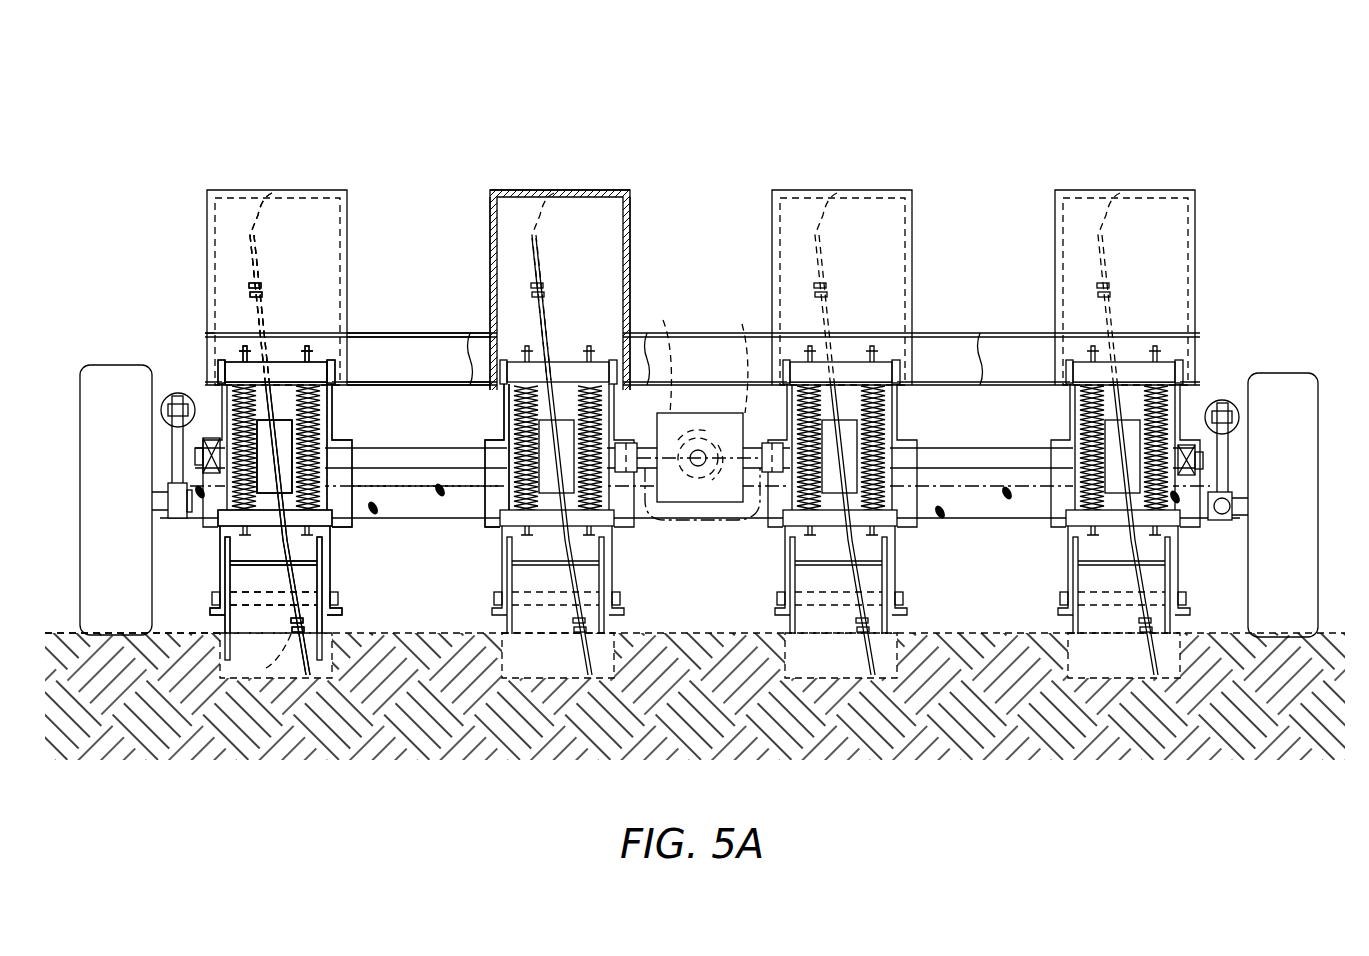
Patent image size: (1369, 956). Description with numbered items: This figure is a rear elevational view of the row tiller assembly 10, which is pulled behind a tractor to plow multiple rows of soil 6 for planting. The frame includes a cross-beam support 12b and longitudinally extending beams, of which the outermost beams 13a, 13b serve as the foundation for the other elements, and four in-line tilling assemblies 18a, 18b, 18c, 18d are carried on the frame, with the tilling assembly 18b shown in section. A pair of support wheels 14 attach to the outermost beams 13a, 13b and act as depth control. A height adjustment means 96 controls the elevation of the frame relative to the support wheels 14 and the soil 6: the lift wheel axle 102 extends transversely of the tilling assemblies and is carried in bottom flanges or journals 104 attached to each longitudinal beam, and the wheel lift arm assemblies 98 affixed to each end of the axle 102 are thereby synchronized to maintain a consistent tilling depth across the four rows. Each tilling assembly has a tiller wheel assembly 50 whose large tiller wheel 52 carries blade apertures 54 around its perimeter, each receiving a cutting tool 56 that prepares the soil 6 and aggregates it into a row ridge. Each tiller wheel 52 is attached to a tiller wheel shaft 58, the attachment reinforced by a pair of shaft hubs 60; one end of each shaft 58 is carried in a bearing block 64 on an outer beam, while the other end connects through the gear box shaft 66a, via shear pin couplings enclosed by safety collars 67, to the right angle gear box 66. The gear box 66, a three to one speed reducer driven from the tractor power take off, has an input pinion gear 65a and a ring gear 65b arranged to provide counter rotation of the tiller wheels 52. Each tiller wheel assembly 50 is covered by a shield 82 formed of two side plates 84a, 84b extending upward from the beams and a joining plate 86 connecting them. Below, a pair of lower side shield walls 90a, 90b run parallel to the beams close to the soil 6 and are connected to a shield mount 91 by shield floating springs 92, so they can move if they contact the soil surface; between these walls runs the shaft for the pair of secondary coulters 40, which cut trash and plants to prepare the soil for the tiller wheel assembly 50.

The soil 6 is at (430, 760).
The row tiller assembly 10 is at (126, 184).
The cross-beam support 12b is at (416, 355).
The outermost beam 13a is at (490, 417).
The outermost beam 13b is at (346, 412).
The support wheel 14 is at (116, 368).
The tilling assembly 18a is at (207, 82).
The tilling assembly 18b is at (492, 82).
The tilling assembly 18c is at (776, 82).
The tilling assembly 18d is at (1056, 82).
The secondary coulter 40 is at (330, 622).
The tiller wheel assembly 50 is at (242, 320).
The tiller wheel 52 is at (546, 330).
The blade aperture 54 is at (262, 657).
The cutting tool 56 is at (270, 193).
The tiller wheel shaft 58 is at (427, 459).
The shaft hub 60 is at (283, 420).
The bearing block 64 is at (203, 472).
The input pinion gear 65a is at (656, 352).
The ring gear 65b is at (740, 354).
The gear box 66 is at (708, 410).
The gear box shaft 66a is at (750, 520).
The safety collar 67 is at (625, 474).
The shield 82 is at (226, 187).
The side plate 84a is at (494, 230).
The side plate 84b is at (627, 238).
The joining plate 86 is at (567, 190).
The lower side shield wall 90a is at (218, 578).
The lower side shield wall 90b is at (338, 588).
The shield mount 91 is at (325, 372).
The shield floating spring 92 is at (318, 422).
The height adjustment means 96 is at (178, 392).
The wheel lift arm assembly 98 is at (172, 442).
The lift wheel axle 102 is at (198, 507).
The journal 104 is at (340, 527).